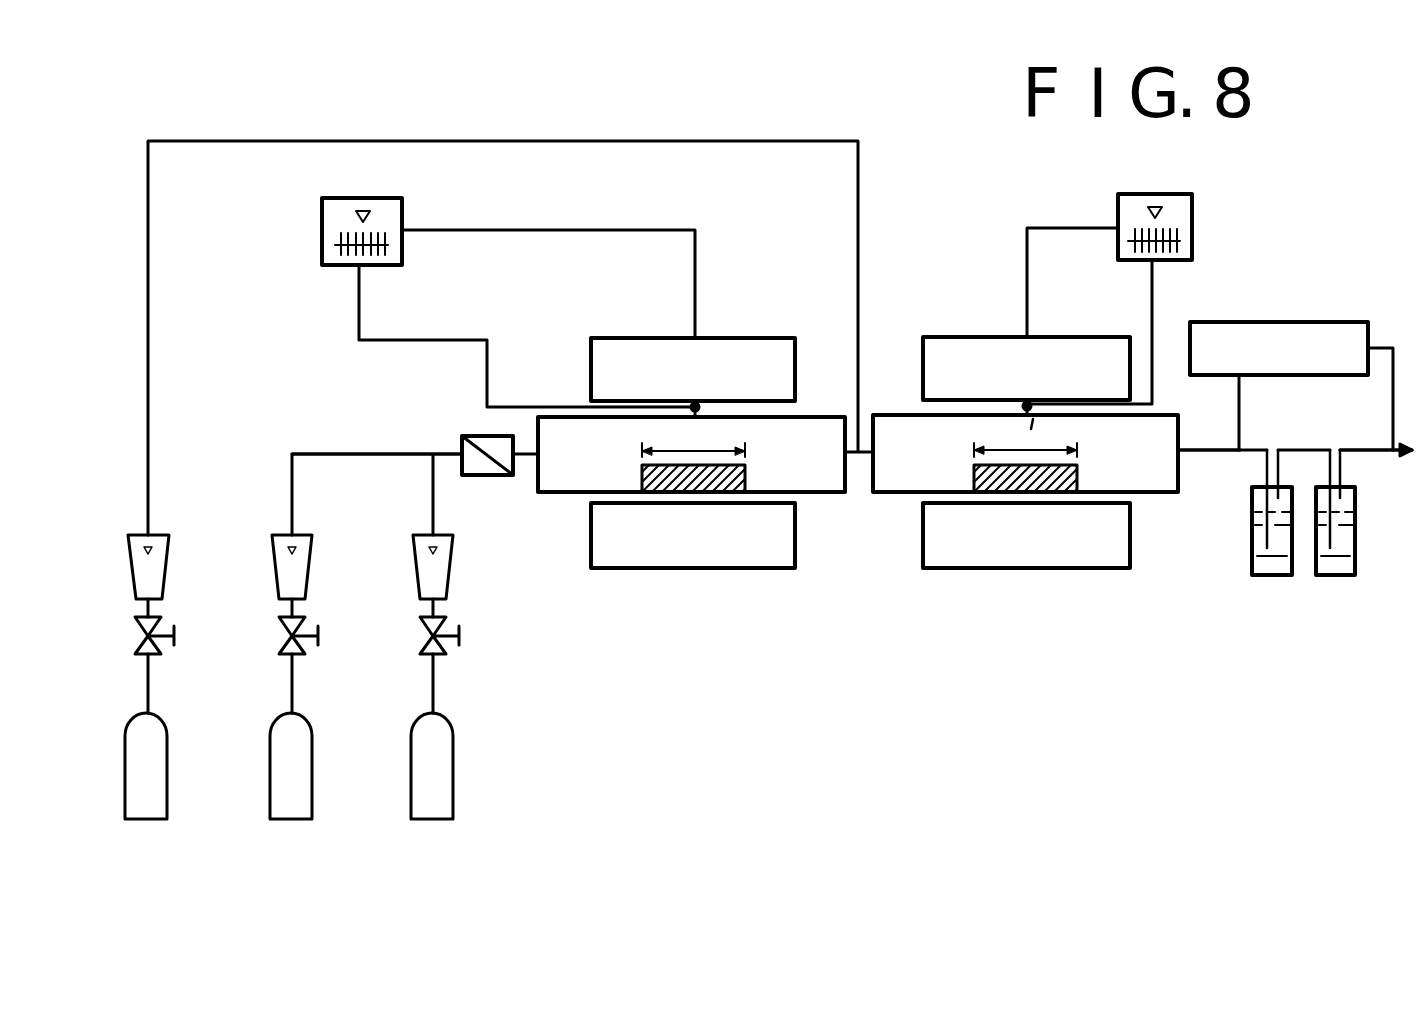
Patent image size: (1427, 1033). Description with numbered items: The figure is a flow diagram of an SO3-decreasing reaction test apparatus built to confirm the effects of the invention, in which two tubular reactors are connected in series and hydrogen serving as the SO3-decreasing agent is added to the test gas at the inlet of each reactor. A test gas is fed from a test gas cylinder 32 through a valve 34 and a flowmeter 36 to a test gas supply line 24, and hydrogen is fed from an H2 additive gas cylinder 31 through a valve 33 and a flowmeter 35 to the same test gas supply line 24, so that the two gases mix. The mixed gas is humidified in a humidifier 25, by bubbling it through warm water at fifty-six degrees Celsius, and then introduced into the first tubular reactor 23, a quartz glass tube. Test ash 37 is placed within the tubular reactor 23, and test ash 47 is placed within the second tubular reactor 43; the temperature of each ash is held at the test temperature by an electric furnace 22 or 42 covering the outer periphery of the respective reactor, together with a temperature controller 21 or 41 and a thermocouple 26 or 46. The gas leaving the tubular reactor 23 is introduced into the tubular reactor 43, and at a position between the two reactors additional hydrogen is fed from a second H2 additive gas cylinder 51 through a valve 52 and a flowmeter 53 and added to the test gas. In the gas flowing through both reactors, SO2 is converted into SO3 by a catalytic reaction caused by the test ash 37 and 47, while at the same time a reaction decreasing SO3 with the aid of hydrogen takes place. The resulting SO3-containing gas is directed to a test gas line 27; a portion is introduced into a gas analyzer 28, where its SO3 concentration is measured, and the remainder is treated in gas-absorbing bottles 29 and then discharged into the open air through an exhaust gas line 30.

The temperature controller 21 is at (322, 210).
The electric furnace 22 is at (752, 338).
The tubular reactor 23 is at (563, 493).
The test gas supply line 24 is at (448, 454).
The humidifier 25 is at (478, 436).
The thermocouple 26 is at (528, 407).
The test gas line 27 is at (1208, 452).
The gas analyzer 28 is at (1340, 322).
The gas-absorbing bottle 29 is at (1335, 577).
The exhaust gas line 30 is at (1399, 456).
The H2 additive gas cylinder 31 is at (290, 820).
The test gas cylinder 32 is at (430, 820).
The valve 33 is at (300, 654).
The valve 34 is at (441, 654).
The flowmeter 35 is at (309, 562).
The flowmeter 36 is at (450, 562).
The test ash 37 is at (748, 478).
The temperature controller 41 is at (1193, 224).
The electric furnace 42 is at (967, 337).
The tubular reactor 43 is at (895, 493).
The thermocouple 46 is at (1153, 295).
The test ash 47 is at (1080, 478).
The H2 additive gas cylinder 51 is at (148, 820).
The valve 52 is at (156, 654).
The flowmeter 53 is at (166, 562).